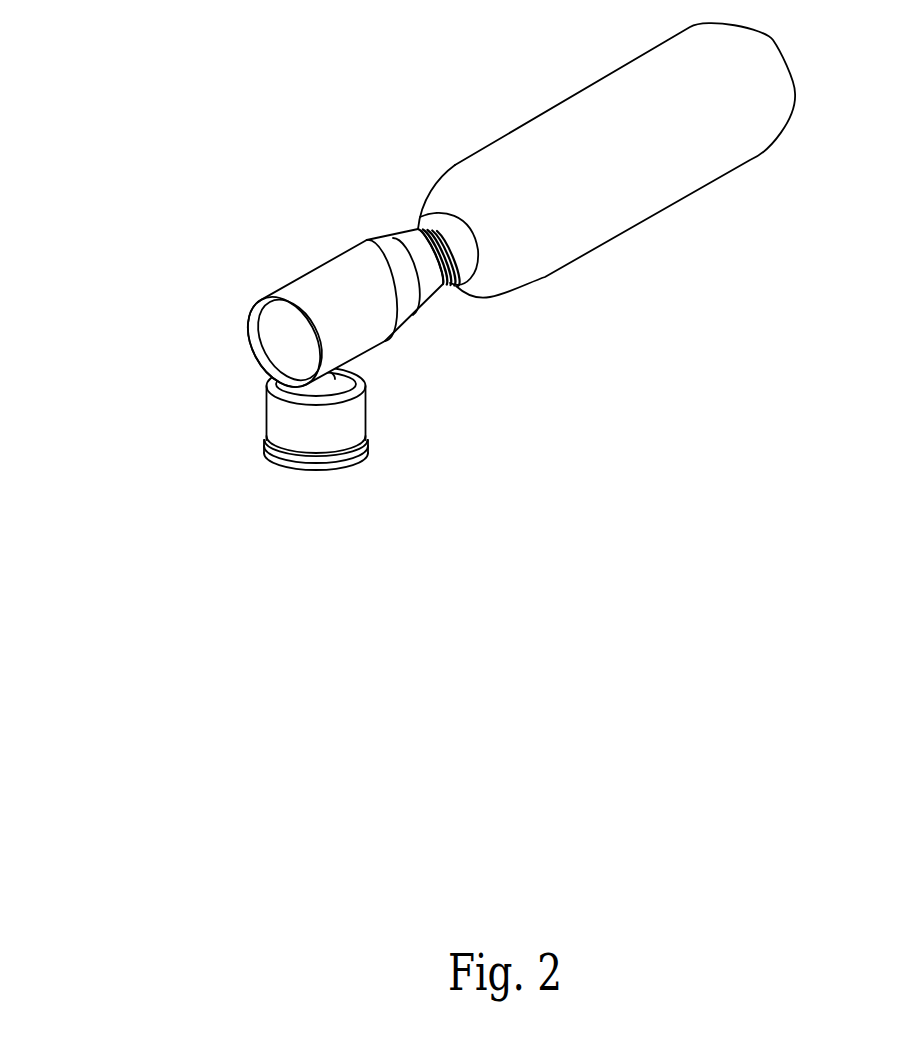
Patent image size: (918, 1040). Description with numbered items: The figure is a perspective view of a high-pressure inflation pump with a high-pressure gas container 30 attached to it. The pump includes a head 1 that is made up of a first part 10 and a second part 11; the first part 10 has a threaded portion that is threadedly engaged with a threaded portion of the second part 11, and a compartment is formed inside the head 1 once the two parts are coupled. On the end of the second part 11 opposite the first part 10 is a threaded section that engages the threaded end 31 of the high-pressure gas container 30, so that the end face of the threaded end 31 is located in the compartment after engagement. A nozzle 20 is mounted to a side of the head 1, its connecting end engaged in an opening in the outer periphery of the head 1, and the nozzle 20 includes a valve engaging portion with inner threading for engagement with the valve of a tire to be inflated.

The head 1 is at (162, 404).
The first part 10 is at (306, 279).
The second part 11 is at (371, 240).
The nozzle 20 is at (338, 441).
The high-pressure gas container 30 is at (643, 197).
The threaded end 31 is at (417, 229).